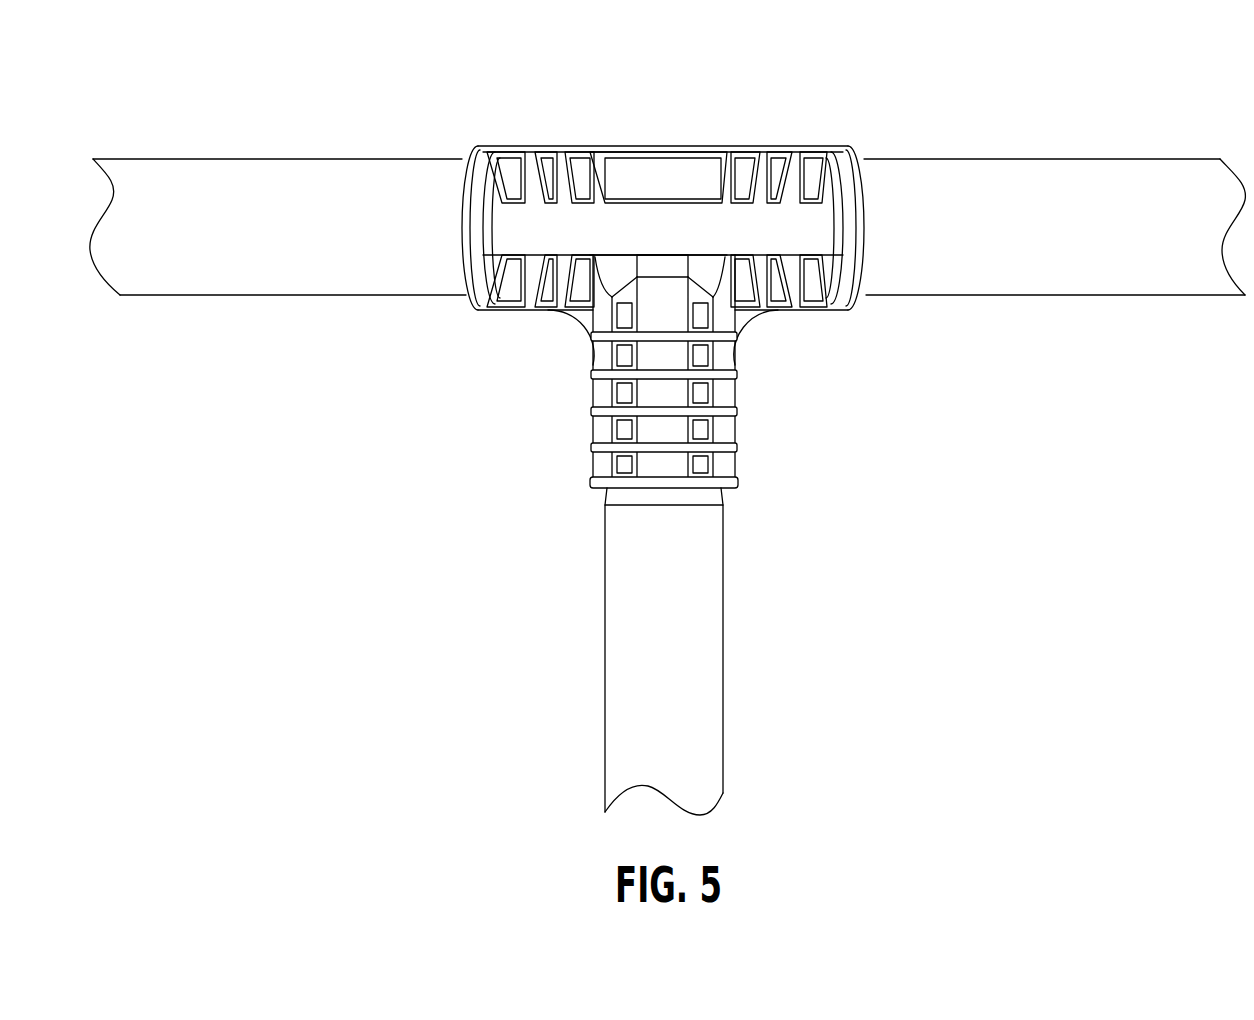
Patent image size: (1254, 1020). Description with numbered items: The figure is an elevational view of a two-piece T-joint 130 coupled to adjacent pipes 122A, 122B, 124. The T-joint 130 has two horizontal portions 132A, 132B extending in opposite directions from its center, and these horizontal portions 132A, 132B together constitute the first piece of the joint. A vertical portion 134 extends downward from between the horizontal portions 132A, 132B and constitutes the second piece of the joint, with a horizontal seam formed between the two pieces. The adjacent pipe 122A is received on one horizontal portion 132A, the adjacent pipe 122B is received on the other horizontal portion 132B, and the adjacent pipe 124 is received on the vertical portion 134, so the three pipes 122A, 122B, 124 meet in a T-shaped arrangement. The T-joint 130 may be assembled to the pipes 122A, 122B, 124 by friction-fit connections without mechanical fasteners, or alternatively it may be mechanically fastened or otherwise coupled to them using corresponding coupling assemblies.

The adjacent pipe 122A is at (1037, 203).
The adjacent pipe 122B is at (280, 203).
The adjacent pipe 124 is at (635, 640).
The two-piece T-joint 130 is at (690, 262).
The horizontal portion 132A is at (833, 148).
The horizontal portion 132B is at (515, 147).
The vertical portion 134 is at (592, 428).